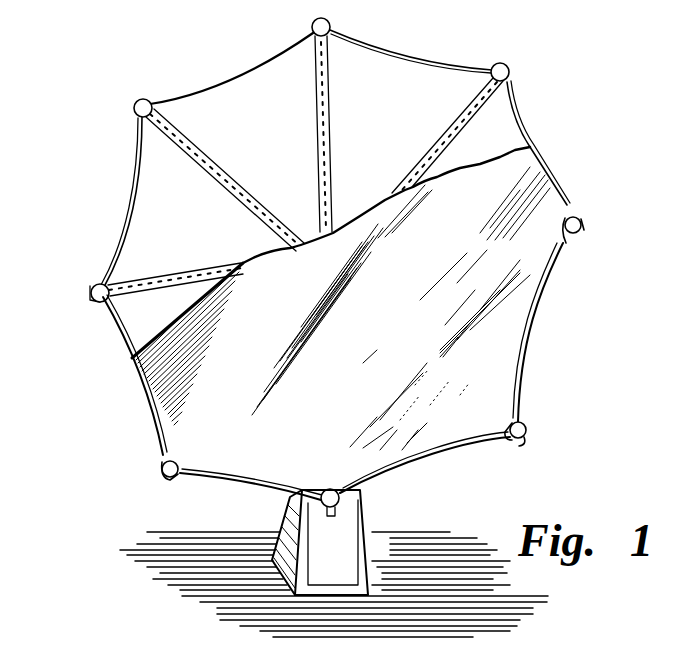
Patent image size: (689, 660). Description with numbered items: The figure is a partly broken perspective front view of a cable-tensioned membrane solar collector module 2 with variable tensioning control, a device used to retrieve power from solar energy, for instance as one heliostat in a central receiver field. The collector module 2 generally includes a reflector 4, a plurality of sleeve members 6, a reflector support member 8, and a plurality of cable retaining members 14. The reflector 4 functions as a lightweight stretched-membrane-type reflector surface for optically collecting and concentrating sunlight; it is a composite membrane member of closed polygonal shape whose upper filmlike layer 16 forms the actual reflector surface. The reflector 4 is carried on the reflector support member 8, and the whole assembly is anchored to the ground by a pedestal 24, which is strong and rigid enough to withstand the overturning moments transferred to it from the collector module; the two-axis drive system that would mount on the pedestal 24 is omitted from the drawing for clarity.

The cable-tensioned membrane solar collector module 2 is at (177, 63).
The cable retaining member 14 is at (137, 111).
The reflector support member 8 is at (144, 299).
The reflector 4 is at (540, 223).
The sleeve member 6 is at (203, 472).
The upper filmlike layer 16 is at (304, 444).
The pedestal 24 is at (352, 571).